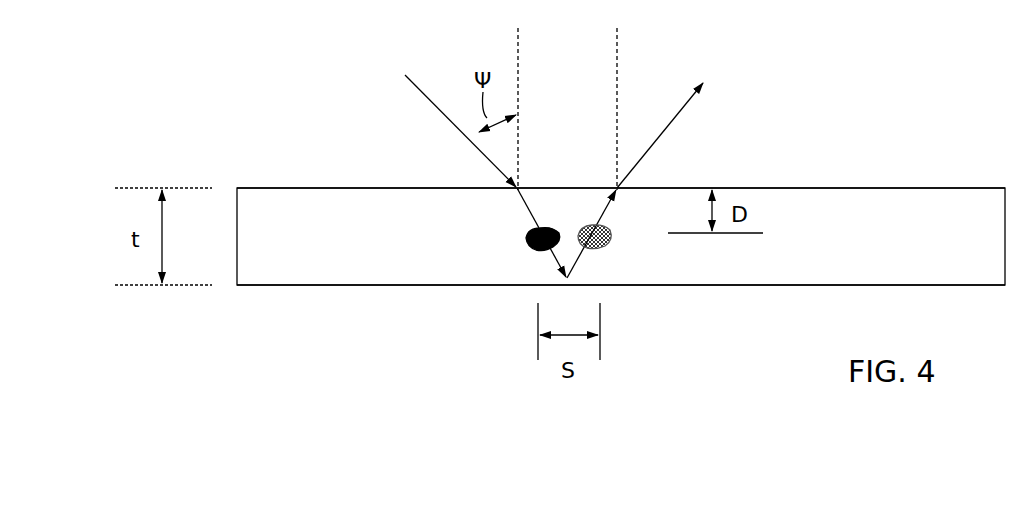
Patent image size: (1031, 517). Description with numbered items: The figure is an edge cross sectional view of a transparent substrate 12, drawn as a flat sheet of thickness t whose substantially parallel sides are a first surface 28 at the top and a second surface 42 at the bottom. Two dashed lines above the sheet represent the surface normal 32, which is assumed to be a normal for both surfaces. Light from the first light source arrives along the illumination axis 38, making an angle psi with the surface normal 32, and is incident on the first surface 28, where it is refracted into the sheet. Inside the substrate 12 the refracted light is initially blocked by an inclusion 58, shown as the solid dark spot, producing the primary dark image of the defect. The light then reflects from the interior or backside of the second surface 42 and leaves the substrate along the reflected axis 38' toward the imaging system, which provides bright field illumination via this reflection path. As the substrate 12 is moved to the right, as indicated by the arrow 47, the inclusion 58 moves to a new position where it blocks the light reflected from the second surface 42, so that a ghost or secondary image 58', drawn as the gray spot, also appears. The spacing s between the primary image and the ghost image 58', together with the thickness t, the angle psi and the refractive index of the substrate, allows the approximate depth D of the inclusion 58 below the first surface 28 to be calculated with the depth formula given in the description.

The transparent substrate 12 is at (790, 156).
The first surface 28 is at (301, 186).
The second surface 42 is at (320, 288).
The surface normal 32 is at (615, 55).
The illumination axis 38 is at (485, 152).
The reflected light axis 38' is at (668, 180).
The inclusion 58 is at (500, 291).
The ghost image of inclusion 58' is at (635, 285).
The arrow indicating substrate motion 47 is at (108, 0).